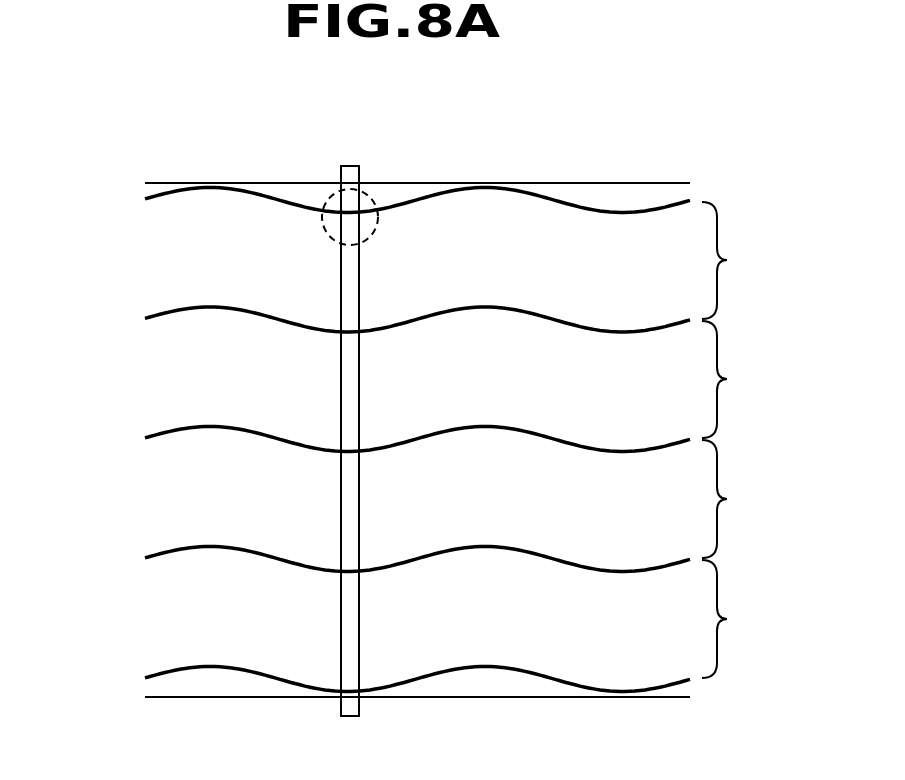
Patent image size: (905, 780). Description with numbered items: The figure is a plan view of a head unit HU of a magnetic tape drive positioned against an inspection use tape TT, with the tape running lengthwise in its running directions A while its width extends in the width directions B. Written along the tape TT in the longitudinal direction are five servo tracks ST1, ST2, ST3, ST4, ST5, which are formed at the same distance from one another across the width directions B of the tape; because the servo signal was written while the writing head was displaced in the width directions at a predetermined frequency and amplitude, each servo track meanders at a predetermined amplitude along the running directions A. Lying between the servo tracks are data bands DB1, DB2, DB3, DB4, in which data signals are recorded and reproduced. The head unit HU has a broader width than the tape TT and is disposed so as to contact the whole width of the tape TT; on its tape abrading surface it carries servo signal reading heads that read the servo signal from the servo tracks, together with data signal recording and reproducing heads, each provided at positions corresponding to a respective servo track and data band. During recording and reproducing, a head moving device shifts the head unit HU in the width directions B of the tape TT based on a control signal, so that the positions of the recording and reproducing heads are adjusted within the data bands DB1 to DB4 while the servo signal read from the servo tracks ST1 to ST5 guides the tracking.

The servo track ST1 is at (381, 201).
The servo track ST2 is at (381, 321).
The servo track ST3 is at (381, 440).
The servo track ST4 is at (381, 562).
The servo track ST5 is at (381, 682).
The head unit HU is at (360, 176).
The inspection use tape TT is at (521, 169).
The data band DB1 is at (743, 260).
The data band DB2 is at (743, 379).
The data band DB3 is at (743, 499).
The data band DB4 is at (743, 619).
The running directions A is at (282, 149).
The width directions B is at (31, 305).